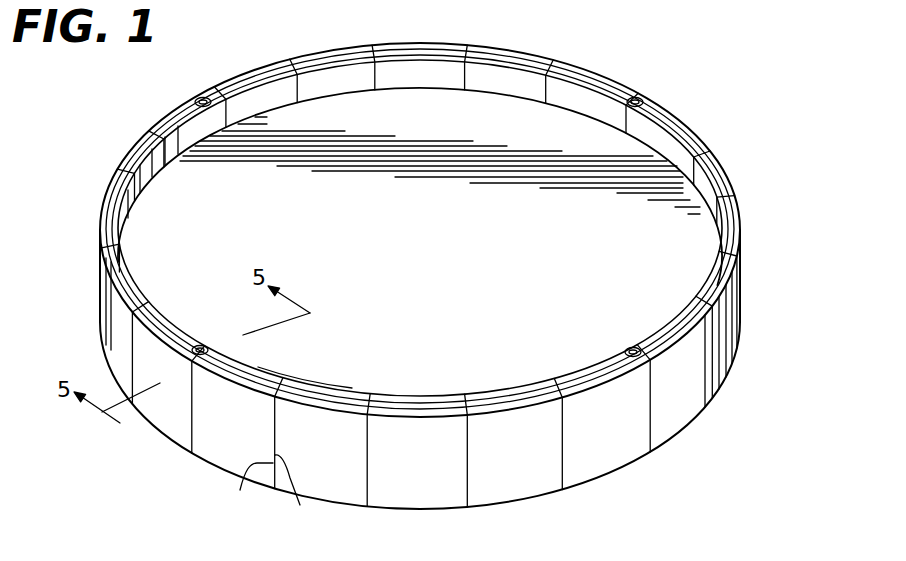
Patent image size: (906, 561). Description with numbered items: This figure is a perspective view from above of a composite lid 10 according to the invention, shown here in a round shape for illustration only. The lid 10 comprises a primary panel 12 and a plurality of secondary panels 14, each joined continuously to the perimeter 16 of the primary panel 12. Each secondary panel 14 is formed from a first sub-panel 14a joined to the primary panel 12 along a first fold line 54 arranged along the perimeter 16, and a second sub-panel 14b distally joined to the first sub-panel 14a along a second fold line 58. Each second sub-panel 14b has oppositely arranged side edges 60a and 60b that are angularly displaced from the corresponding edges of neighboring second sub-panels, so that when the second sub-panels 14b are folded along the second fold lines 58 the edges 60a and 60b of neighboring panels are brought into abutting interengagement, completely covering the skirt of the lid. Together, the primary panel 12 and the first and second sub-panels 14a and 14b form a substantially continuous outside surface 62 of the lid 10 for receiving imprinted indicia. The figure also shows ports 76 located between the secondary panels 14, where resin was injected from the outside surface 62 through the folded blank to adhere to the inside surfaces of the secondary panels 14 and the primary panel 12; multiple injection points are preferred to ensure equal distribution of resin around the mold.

The lid 10 is at (738, 126).
The primary panel 12 is at (443, 254).
The secondary panels 14 is at (210, 450).
The first sub-panel 14a is at (258, 367).
The second sub-panel 14b is at (264, 432).
The perimeter 16 is at (513, 97).
The first fold line 54 is at (155, 185).
The second fold line 58 is at (128, 288).
The side edge 60a is at (300, 505).
The side edge 60b is at (240, 490).
The outside surface 62 is at (760, 240).
The port 76 is at (198, 100).